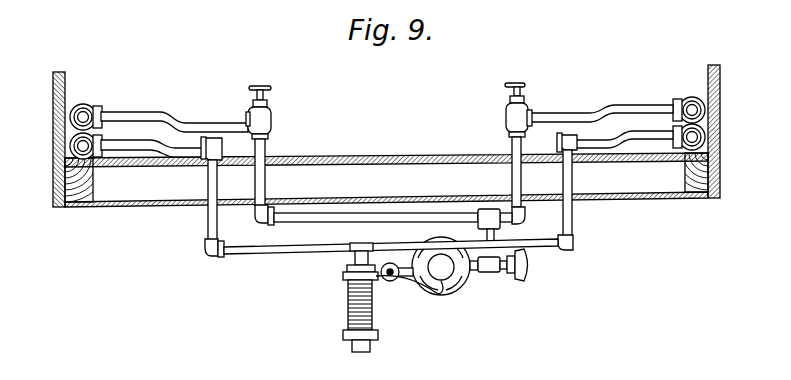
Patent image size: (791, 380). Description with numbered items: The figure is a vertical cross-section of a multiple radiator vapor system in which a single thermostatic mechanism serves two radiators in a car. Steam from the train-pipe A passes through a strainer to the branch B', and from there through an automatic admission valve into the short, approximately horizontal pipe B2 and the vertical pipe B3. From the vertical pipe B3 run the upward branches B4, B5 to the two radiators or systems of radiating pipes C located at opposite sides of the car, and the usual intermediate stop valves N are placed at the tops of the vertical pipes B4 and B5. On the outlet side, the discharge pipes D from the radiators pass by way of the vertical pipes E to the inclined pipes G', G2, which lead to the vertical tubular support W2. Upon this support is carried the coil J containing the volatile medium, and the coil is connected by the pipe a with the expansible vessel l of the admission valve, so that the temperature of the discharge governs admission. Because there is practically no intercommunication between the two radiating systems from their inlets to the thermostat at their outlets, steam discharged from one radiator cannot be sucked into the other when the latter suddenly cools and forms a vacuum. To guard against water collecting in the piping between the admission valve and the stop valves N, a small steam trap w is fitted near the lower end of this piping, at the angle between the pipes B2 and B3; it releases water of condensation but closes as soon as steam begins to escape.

The radiators C is at (80, 108).
The intermediate stop valves N is at (272, 125).
The upward branch B4 is at (262, 183).
The upward branch B5 is at (517, 181).
The branch B' is at (376, 218).
The vertical pipe B3 is at (483, 209).
The discharge pipes D is at (612, 152).
The vertical pipes E is at (572, 212).
The train-pipe A is at (402, 247).
The inclined pipe G' is at (235, 213).
The inclined pipe G2 is at (539, 250).
The short approximately horizontal pipe B2 is at (470, 292).
The vertical tubular support W2 is at (356, 275).
The coil J is at (347, 314).
The pipe a is at (398, 296).
The expansible vessel l is at (447, 296).
The steam trap w is at (521, 282).